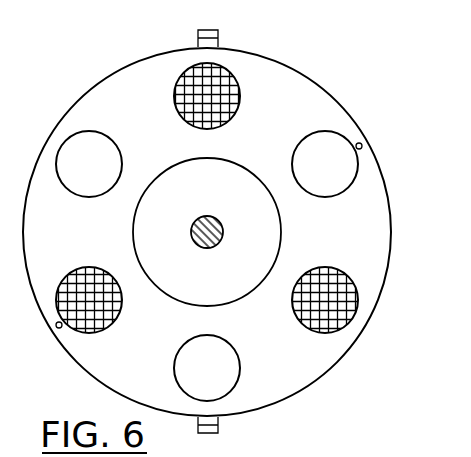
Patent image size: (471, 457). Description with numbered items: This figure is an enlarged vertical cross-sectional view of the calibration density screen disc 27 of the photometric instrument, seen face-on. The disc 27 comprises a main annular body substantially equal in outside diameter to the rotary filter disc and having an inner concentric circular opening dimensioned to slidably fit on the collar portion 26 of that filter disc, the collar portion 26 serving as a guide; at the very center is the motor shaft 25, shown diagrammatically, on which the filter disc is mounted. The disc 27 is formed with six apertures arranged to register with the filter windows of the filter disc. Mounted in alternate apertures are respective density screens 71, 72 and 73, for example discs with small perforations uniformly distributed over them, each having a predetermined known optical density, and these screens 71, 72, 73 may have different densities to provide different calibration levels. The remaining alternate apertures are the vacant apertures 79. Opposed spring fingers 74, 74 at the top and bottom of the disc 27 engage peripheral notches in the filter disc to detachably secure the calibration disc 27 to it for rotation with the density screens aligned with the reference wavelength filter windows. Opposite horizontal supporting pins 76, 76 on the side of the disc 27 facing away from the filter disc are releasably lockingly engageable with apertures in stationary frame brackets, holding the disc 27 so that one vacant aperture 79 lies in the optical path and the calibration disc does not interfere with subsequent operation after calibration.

The motor shaft 25 is at (211, 219).
The collar portion 26 is at (165, 173).
The calibration density screen disc 27 is at (308, 366).
The density screen 71 is at (238, 102).
The density screen 72 is at (331, 268).
The density screen 73 is at (104, 327).
The spring finger 74 is at (219, 32).
The supporting pin 76 is at (363, 149).
The vacant aperture 79 is at (293, 163).